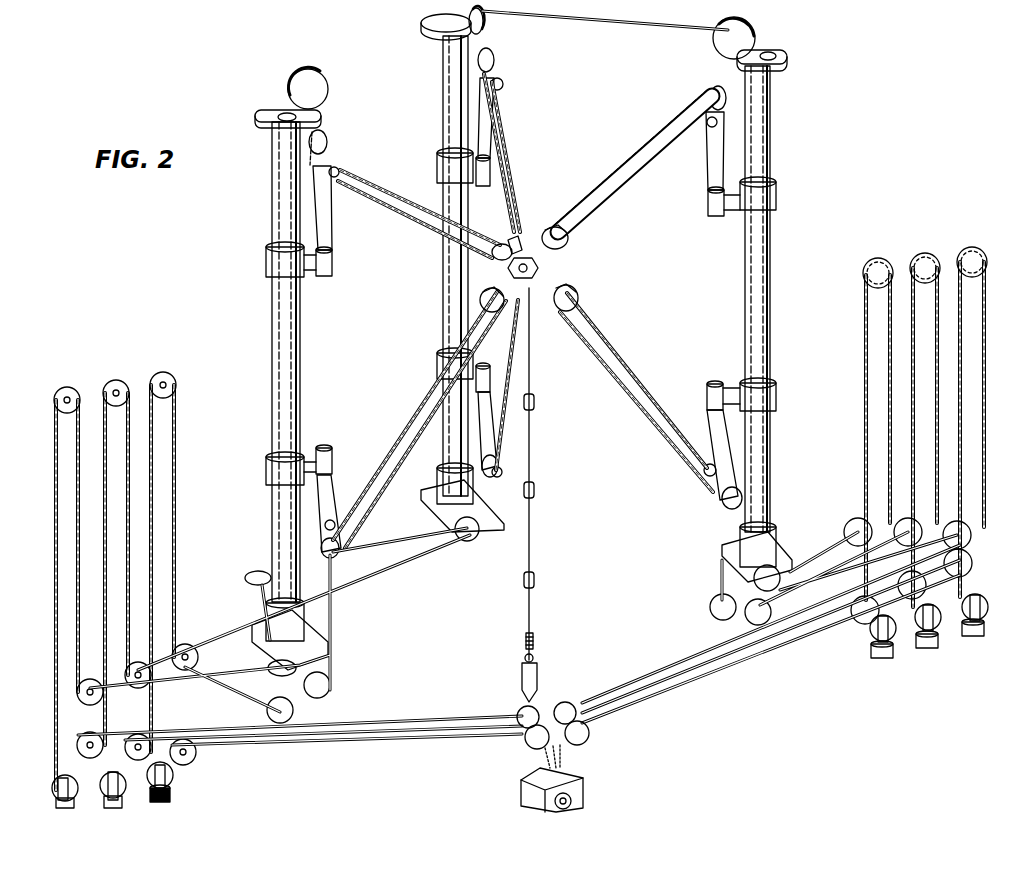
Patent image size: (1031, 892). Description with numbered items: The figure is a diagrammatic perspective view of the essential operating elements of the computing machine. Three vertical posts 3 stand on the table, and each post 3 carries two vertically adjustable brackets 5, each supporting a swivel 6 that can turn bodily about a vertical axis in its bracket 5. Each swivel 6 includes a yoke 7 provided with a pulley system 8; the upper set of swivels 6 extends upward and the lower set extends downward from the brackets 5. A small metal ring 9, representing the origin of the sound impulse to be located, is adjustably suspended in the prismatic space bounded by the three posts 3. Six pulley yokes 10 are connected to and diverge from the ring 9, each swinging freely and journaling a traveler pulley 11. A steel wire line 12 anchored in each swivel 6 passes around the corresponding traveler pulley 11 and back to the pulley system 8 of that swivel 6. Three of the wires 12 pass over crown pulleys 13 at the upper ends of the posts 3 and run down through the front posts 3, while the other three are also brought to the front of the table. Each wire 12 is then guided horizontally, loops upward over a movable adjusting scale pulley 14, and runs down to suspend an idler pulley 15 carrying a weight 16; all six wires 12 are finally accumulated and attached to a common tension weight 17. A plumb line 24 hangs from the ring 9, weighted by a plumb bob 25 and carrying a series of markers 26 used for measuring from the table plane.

The vertical post 3 is at (272, 200).
The vertically adjustable bracket 5 is at (268, 262).
The swivel 6 is at (334, 262).
The yoke 7 is at (327, 222).
The pulley system 8 is at (334, 172).
The metal ring 9 is at (540, 266).
The pulley yoke 10 is at (560, 226).
The traveler pulley 11 is at (518, 230).
The steel wire line 12 is at (400, 212).
The crown pulley 13 is at (318, 82).
The movable adjusting scale pulley 14 is at (160, 375).
The idler pulley 15 is at (56, 790).
The weight 16 is at (172, 795).
The common tension weight 17 is at (583, 790).
The plumb line 24 is at (533, 436).
The plumb bob 25 is at (538, 678).
The marker 26 is at (535, 578).